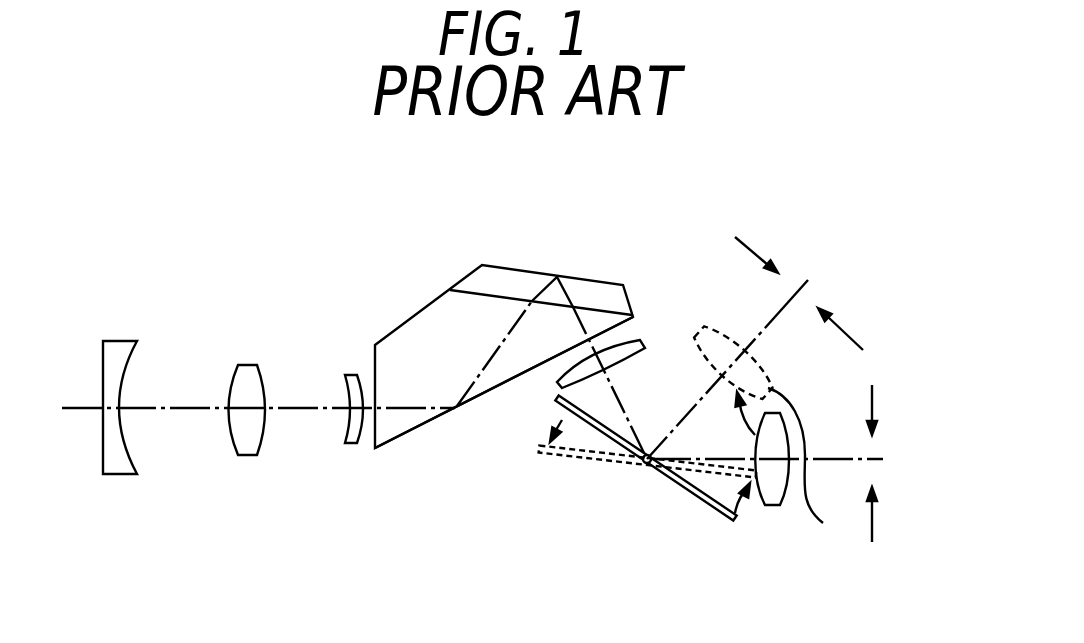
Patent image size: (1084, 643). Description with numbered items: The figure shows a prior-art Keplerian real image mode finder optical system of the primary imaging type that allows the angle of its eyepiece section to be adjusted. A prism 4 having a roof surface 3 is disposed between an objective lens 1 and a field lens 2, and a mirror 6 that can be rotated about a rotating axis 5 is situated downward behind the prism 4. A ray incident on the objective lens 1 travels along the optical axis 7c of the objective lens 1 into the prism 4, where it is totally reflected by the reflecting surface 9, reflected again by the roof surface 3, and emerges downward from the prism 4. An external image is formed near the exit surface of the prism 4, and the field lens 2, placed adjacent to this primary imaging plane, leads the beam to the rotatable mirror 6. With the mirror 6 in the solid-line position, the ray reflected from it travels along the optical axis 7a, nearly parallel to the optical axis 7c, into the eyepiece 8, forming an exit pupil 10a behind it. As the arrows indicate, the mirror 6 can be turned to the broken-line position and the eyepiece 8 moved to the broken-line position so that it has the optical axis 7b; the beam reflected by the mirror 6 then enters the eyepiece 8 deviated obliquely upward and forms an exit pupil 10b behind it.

The objective lens 1 is at (98, 333).
The field lens 2 is at (637, 363).
The roof surface 3 is at (522, 283).
The prism 4 is at (438, 320).
The rotating axis 5 is at (643, 467).
The mirror 6 is at (715, 477).
The optical axis 7a is at (883, 460).
The optical axis 7b is at (797, 290).
The optical axis of the objective lens 7c is at (188, 408).
The eyepiece 8 is at (783, 495).
The reflecting surface 9 is at (480, 398).
The exit pupil 10a is at (875, 405).
The exit pupil 10b is at (752, 245).